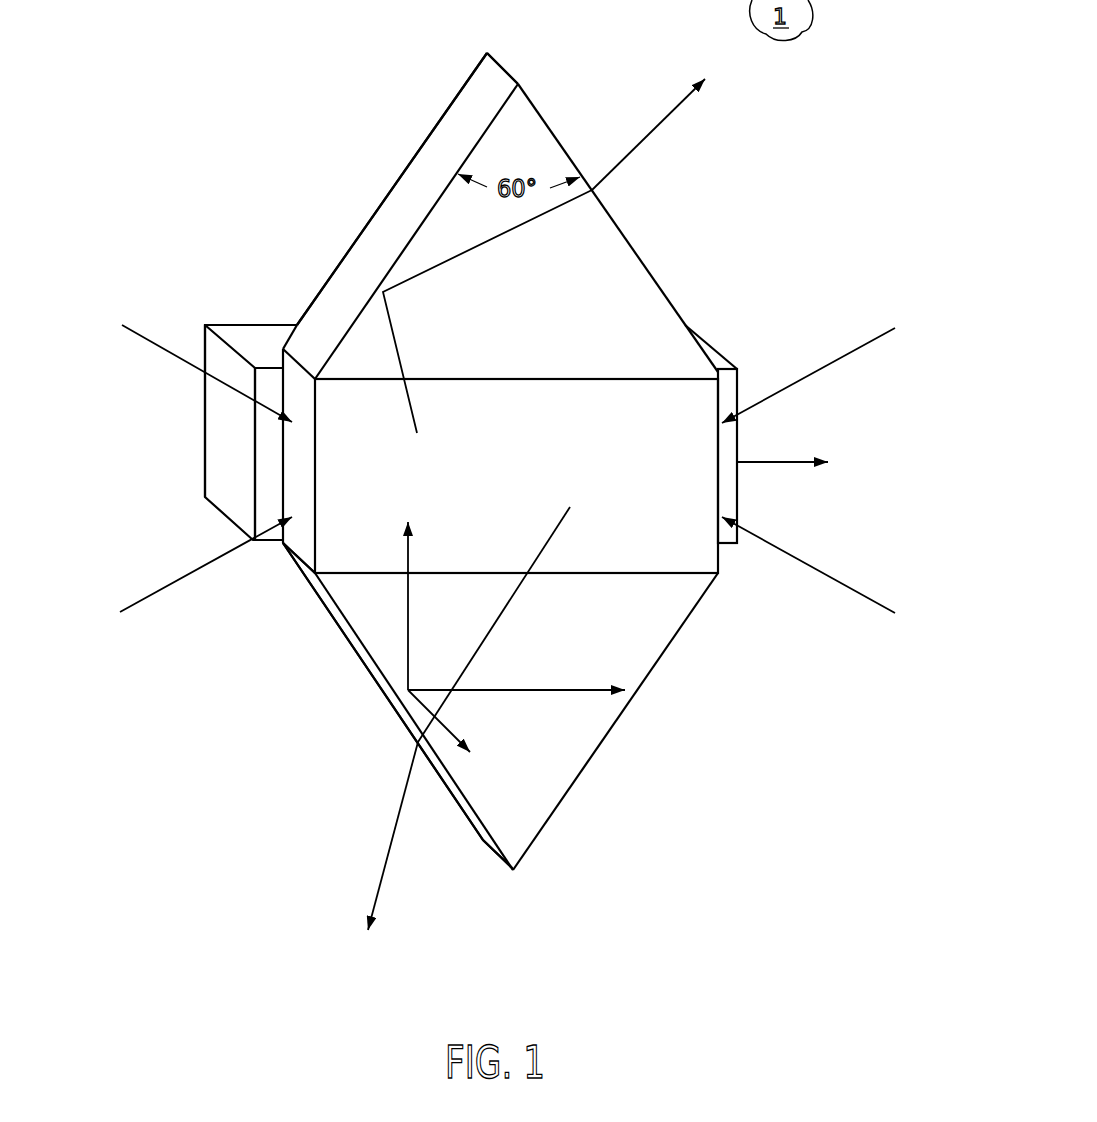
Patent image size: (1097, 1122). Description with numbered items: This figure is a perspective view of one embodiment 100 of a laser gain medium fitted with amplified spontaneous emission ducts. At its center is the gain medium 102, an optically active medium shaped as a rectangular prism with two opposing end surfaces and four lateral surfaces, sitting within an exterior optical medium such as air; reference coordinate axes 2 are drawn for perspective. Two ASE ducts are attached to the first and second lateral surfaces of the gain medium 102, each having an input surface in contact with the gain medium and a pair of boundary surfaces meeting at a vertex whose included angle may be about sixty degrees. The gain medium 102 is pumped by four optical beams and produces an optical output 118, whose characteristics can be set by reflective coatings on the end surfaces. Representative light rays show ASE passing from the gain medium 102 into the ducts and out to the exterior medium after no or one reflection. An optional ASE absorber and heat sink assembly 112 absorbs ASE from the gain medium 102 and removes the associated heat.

The reference coordinate axes 2 is at (410, 650).
The embodiment 100 is at (518, 1018).
The gain medium 102 is at (718, 574).
The ASE absorber and heat sink assembly 112 is at (205, 422).
The optical output 118 is at (790, 458).